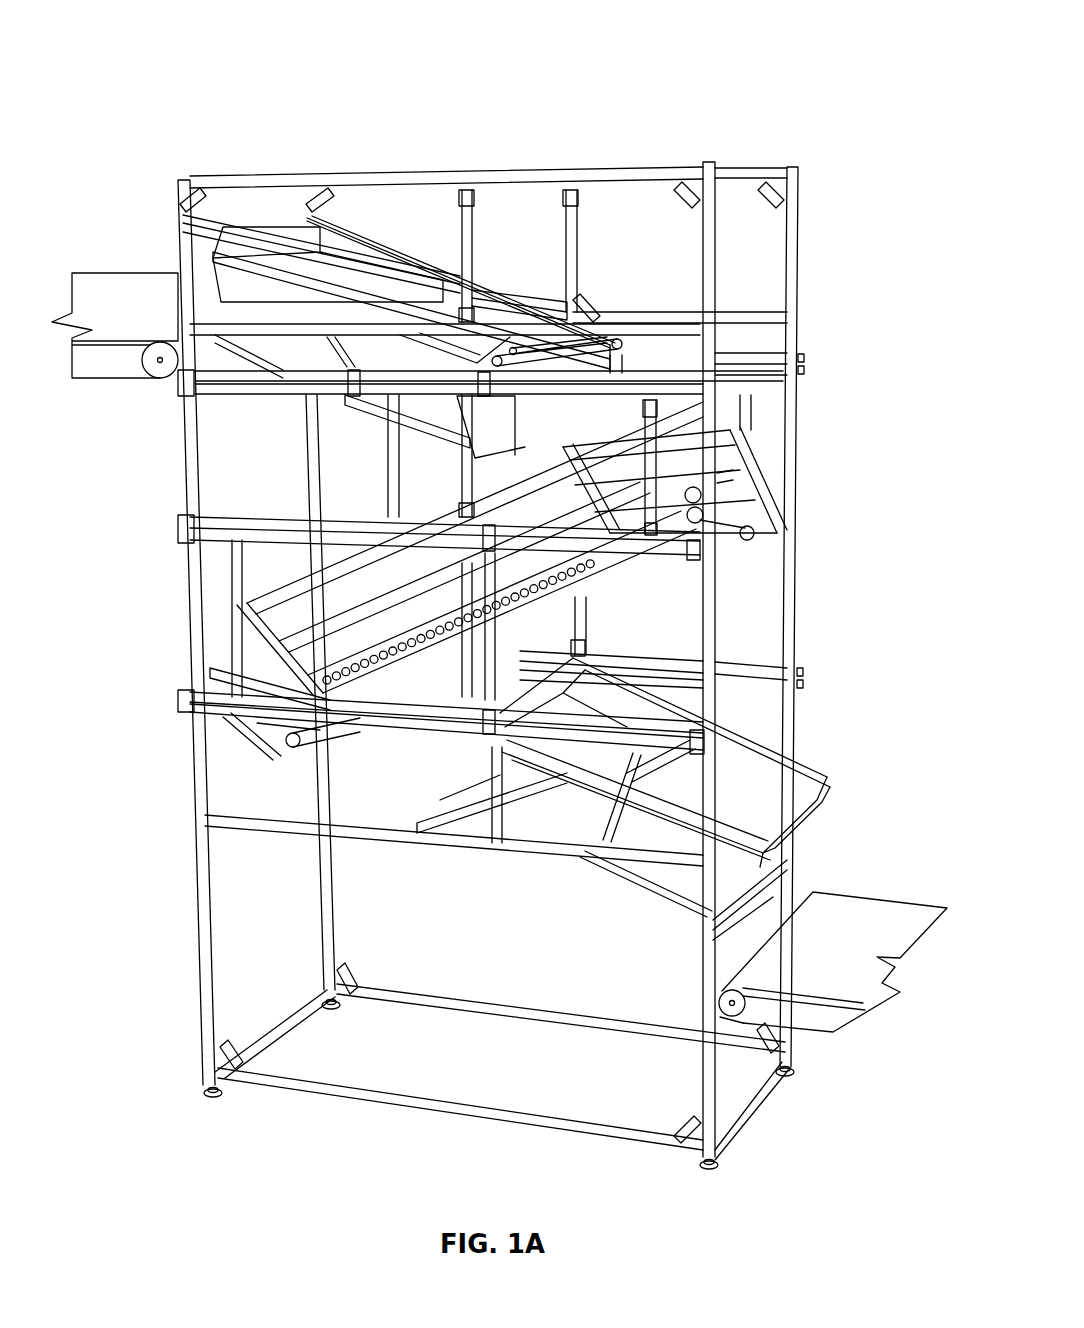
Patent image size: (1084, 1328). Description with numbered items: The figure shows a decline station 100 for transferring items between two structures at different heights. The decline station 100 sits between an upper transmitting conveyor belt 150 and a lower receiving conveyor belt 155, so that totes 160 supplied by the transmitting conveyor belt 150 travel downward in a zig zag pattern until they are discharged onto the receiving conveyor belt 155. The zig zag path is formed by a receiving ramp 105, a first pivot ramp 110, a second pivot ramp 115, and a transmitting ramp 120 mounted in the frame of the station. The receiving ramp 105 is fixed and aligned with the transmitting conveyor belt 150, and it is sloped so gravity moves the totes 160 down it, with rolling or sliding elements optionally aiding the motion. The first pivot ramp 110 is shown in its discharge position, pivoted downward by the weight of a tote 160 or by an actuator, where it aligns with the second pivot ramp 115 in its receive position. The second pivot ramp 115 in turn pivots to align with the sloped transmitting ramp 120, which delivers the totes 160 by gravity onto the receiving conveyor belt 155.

The decline station 100 is at (790, 81).
The receiving ramp 105 is at (336, 402).
The first pivot ramp 110 is at (773, 537).
The second pivot ramp 115 is at (340, 735).
The transmitting ramp 120 is at (591, 881).
The transmitting conveyor belt 150 is at (128, 272).
The receiving conveyor belt 155 is at (823, 1035).
The tote 160 is at (493, 290).